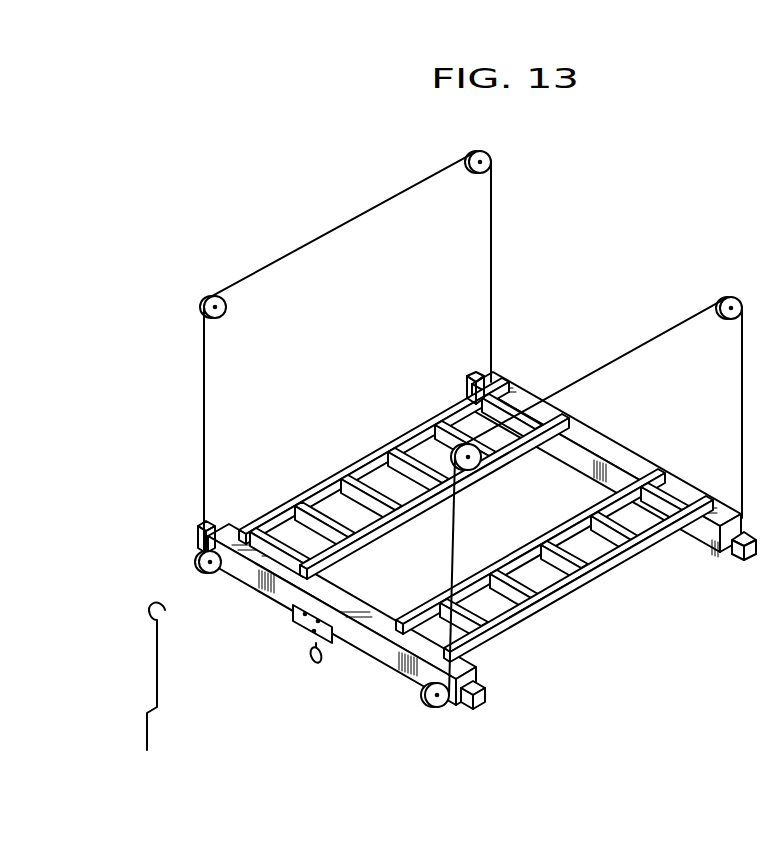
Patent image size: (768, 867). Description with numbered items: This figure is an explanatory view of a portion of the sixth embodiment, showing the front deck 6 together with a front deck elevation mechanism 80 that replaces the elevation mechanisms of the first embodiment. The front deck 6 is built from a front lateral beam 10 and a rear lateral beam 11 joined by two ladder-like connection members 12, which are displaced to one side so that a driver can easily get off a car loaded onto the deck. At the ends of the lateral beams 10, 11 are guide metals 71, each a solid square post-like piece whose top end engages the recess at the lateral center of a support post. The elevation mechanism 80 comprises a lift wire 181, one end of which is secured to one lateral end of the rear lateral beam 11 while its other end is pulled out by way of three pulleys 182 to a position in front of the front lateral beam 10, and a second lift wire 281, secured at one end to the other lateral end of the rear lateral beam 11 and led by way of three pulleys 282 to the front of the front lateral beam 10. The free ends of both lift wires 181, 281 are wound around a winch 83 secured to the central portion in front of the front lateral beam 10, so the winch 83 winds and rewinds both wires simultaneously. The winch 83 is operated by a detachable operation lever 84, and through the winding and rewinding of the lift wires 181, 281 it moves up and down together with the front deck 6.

The front deck 6 is at (329, 473).
The front lateral beam 10 is at (328, 591).
The rear lateral beam 11 is at (614, 452).
The ladder-like connection member 12 is at (406, 514).
The guide metal 71 is at (467, 388).
The front deck elevation mechanism 80 is at (186, 568).
The winch 83 is at (302, 636).
The detachable operation lever 84 is at (157, 683).
The lift wire 181 is at (609, 362).
The pulley 182 is at (742, 297).
The lift wire 281 is at (293, 250).
The pulley 282 is at (492, 162).